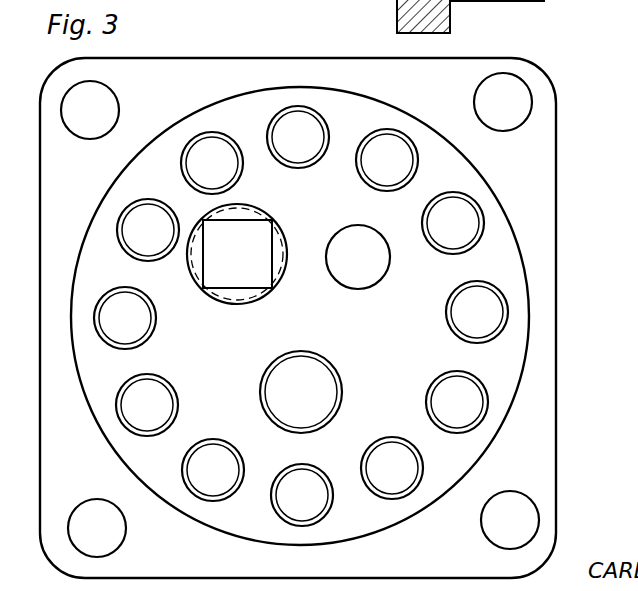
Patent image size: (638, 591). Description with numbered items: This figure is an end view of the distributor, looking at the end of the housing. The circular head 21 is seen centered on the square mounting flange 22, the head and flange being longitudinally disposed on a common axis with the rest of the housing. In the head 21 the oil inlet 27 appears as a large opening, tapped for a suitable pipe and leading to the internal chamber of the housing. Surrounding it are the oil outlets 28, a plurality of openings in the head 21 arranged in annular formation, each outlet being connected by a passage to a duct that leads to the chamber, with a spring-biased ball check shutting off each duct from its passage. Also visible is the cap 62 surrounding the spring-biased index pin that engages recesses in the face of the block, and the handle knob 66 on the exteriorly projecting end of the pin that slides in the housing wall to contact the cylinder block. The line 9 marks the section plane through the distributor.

The mounting flange 22 is at (545, 133).
The head 21 is at (512, 367).
The oil outlets 28 is at (403, 163).
The oil inlet 27 is at (327, 377).
The cap 62 is at (212, 265).
The handle knob 66 is at (377, 270).
The section line 9- 9 is at (381, 231).